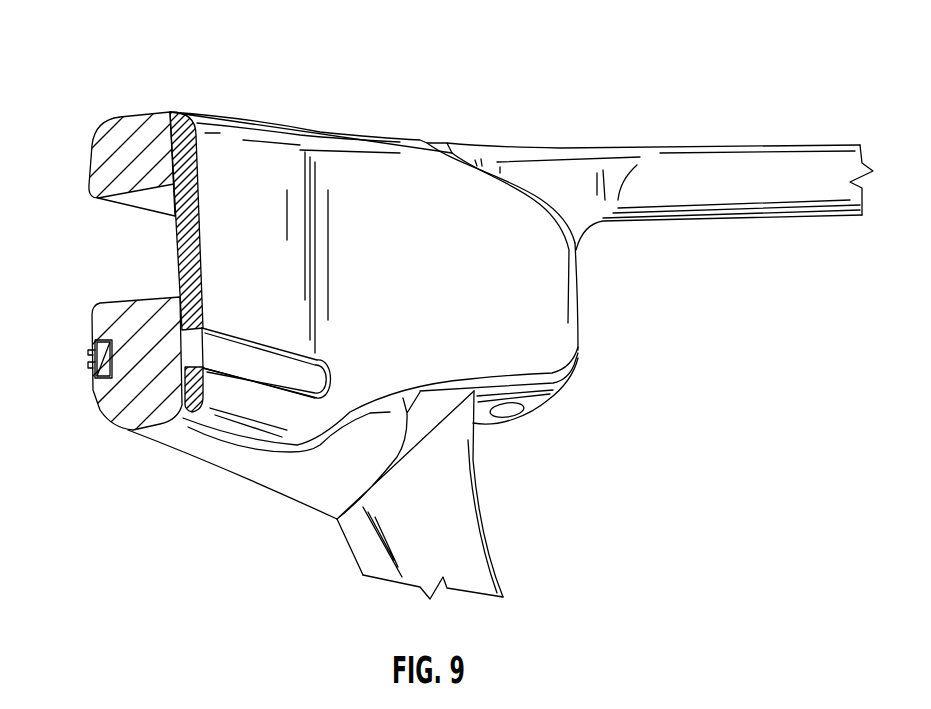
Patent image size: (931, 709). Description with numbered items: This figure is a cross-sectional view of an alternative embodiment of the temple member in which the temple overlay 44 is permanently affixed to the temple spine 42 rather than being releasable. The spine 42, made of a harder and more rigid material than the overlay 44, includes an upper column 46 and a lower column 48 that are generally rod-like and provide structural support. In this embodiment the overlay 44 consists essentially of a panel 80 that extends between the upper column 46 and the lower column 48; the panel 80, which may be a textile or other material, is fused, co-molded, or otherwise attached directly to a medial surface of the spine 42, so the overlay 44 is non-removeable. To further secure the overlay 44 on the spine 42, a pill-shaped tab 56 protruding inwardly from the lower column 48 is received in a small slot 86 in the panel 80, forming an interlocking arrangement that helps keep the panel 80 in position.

The temple spine 42 is at (109, 156).
The temple overlay 44 is at (245, 127).
The upper column 46 is at (125, 143).
The lower column 48 is at (123, 323).
The tab 56 is at (267, 370).
The panel 80 is at (207, 243).
The slot 86 is at (223, 326).